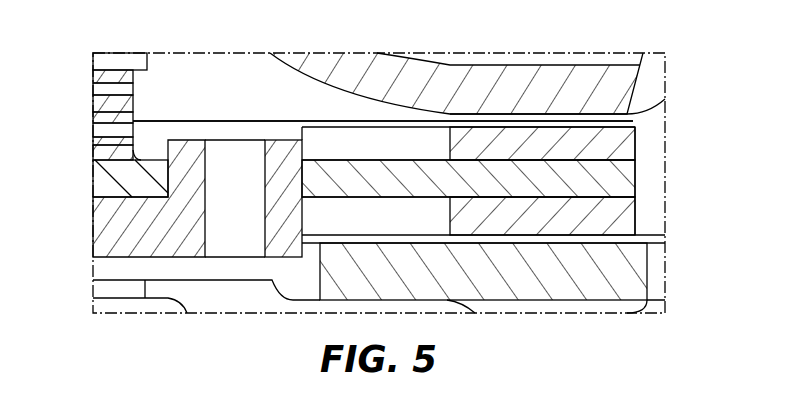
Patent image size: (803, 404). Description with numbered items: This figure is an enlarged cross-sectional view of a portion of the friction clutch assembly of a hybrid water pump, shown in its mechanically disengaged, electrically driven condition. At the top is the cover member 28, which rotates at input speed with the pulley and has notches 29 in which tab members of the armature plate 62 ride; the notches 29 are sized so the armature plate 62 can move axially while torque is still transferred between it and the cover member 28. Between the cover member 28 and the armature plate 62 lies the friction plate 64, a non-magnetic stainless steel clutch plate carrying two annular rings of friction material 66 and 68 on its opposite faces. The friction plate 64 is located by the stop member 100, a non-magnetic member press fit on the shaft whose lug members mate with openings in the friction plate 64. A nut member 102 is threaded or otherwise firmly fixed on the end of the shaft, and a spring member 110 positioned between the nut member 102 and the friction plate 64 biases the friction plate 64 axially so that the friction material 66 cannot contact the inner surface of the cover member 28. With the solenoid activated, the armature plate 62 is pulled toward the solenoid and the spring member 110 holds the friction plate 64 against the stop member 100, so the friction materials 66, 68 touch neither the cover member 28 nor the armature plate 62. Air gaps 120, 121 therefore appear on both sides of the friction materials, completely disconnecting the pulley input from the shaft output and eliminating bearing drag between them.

The cover member 28 is at (642, 73).
The notches 29 is at (513, 113).
The armature plate 62 is at (637, 270).
The friction plate 64 is at (615, 178).
The friction material 66 is at (615, 137).
The friction material 68 is at (613, 212).
The stop member 100 is at (120, 229).
The nut member 102 is at (128, 57).
The spring member 110 is at (131, 99).
The air gap 120 is at (640, 118).
The air gap 121 is at (648, 238).